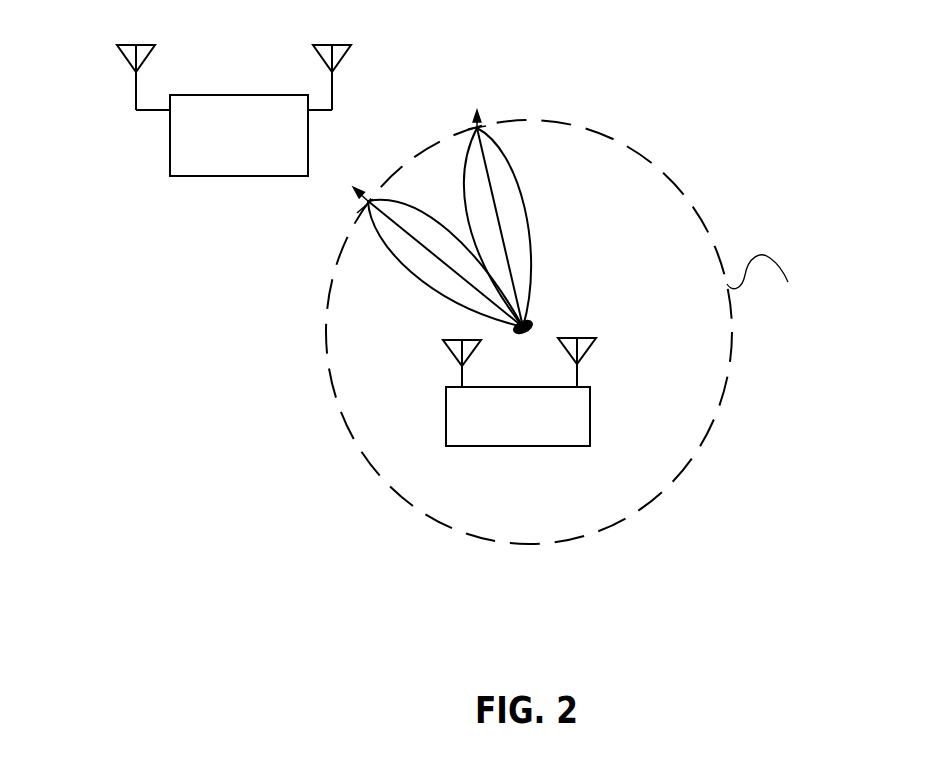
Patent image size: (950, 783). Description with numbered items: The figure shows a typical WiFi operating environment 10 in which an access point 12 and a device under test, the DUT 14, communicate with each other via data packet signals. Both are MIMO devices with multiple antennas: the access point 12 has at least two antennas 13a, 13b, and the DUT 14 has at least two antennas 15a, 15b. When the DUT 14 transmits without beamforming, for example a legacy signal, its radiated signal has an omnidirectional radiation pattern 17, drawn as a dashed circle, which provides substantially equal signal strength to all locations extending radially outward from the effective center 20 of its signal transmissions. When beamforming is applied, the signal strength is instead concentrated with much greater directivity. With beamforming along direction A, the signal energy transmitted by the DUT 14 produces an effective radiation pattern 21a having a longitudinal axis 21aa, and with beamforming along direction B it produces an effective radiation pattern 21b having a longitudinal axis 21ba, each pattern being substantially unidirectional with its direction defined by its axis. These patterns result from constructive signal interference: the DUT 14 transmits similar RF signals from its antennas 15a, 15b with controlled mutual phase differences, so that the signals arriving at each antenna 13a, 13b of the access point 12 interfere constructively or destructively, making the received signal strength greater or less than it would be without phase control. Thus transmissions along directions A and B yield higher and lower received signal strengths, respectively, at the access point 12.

The operating environment 10 is at (36, 306).
The access point 12 is at (185, 177).
The antenna 13a is at (150, 56).
The antenna 13b is at (320, 57).
The DUT 14 is at (517, 446).
The antenna 15a is at (446, 350).
The antenna 15b is at (596, 347).
The omnidirectional radiation pattern 17 is at (725, 387).
The effective center 20 is at (524, 337).
The effective radiation pattern 21a is at (444, 227).
The longitudinal axis 21aa is at (447, 273).
The effective radiation pattern 21b is at (527, 191).
The longitudinal axis 21ba is at (503, 230).